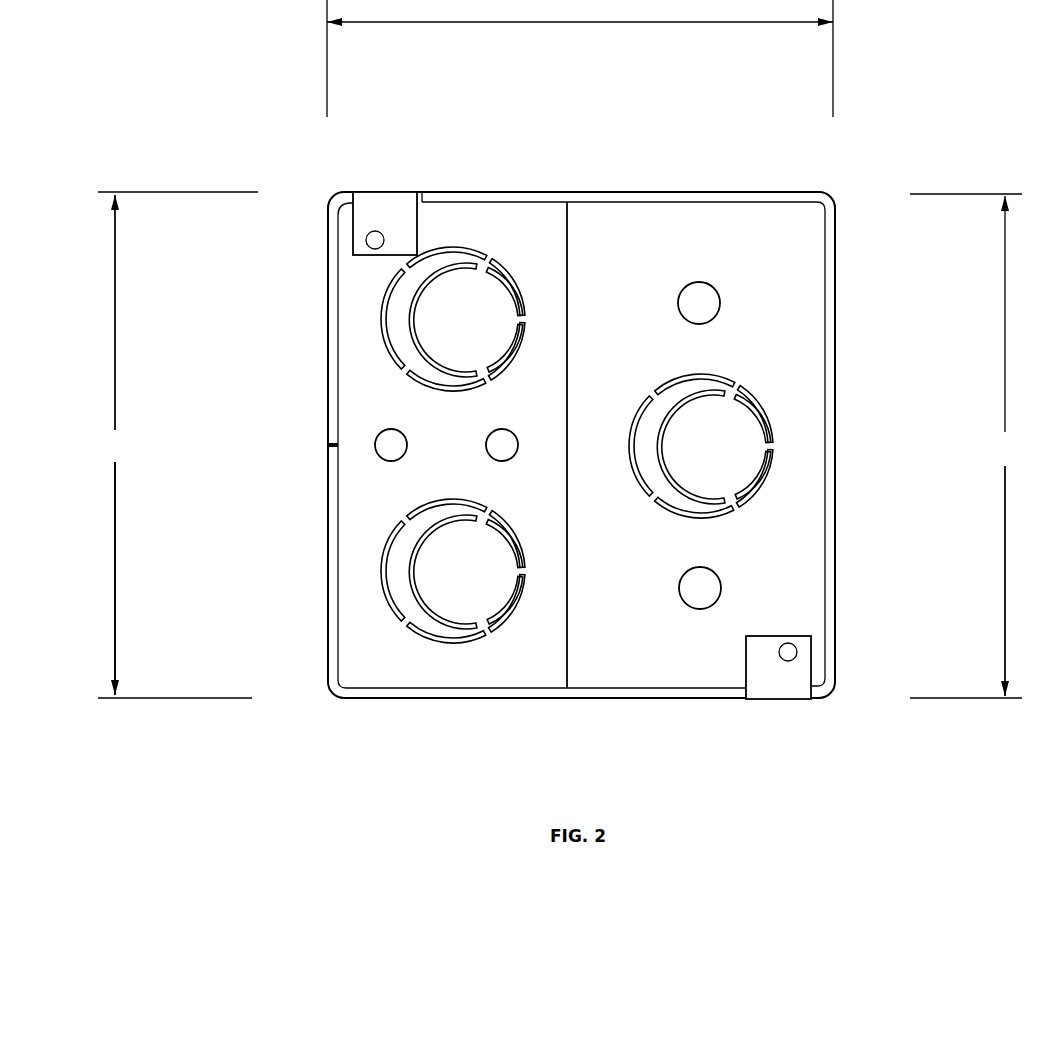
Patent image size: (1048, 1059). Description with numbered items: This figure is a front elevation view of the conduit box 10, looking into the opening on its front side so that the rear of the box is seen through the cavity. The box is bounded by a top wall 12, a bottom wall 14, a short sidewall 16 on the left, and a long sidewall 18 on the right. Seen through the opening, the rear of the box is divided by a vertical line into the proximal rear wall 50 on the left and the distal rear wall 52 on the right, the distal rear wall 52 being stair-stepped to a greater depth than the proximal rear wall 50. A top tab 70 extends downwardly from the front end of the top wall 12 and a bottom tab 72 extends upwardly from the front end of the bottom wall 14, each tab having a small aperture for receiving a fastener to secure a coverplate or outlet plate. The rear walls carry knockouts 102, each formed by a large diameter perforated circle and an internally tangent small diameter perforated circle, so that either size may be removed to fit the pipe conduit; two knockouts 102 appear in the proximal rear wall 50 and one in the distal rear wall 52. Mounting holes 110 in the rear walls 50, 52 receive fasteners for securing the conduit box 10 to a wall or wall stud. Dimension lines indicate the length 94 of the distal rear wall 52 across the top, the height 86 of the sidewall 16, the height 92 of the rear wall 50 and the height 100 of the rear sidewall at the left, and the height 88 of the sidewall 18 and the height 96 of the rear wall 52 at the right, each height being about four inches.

The conduit box 10 is at (310, 722).
The top wall 12 is at (641, 192).
The bottom wall 14 is at (540, 700).
The short sidewall 16 is at (327, 423).
The long sidewall 18 is at (836, 447).
The proximal rear wall 50 is at (383, 667).
The distal rear wall 52 is at (782, 404).
The top tab 70 is at (386, 210).
The bottom tab 72 is at (771, 676).
The height of sidewall 16 86 is at (90, 456).
The height of sidewall 18 88 is at (997, 459).
The height of rear wall 50 92 is at (121, 456).
The length of rear wall 52 94 is at (568, 10).
The height of rear wall 52 96 is at (1028, 459).
The height of rear sidewall 100 is at (162, 456).
The knockout 102 is at (475, 252).
The mounting hole 110 is at (383, 430).